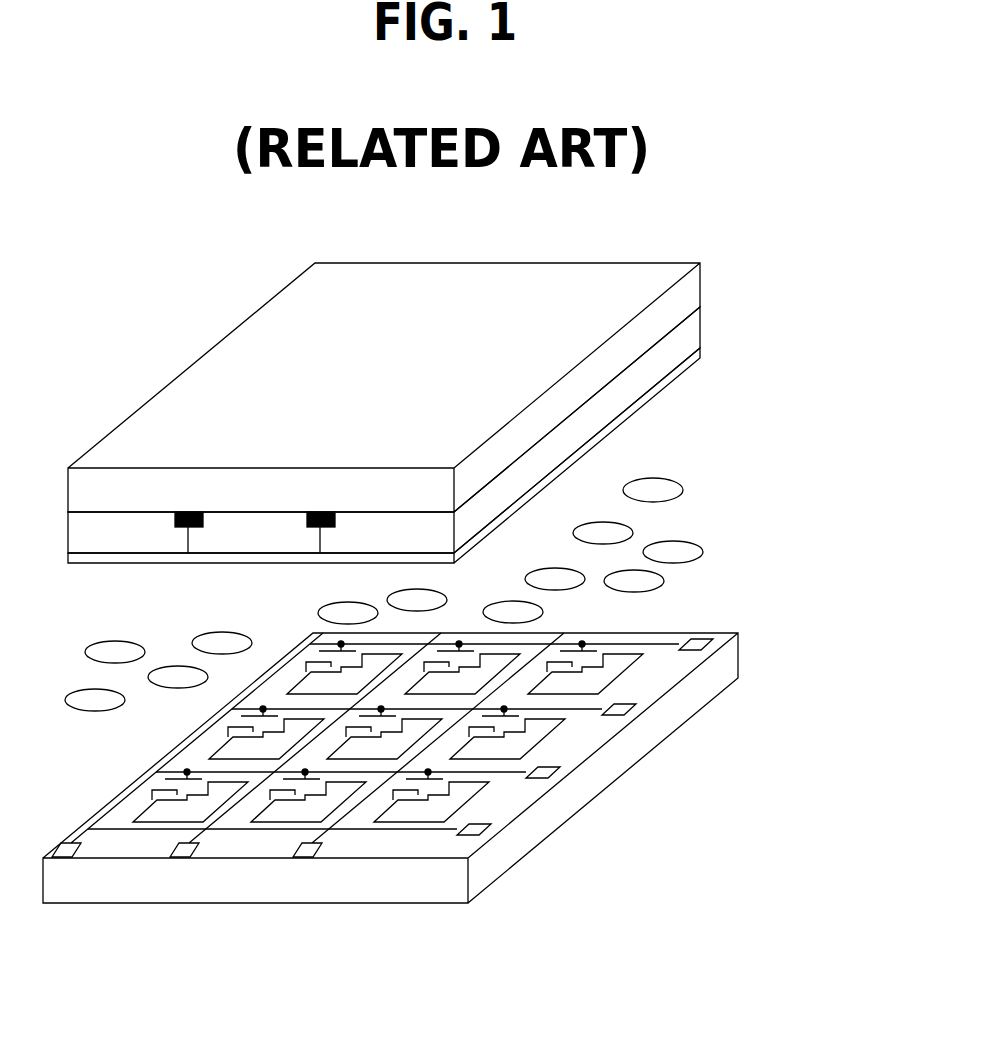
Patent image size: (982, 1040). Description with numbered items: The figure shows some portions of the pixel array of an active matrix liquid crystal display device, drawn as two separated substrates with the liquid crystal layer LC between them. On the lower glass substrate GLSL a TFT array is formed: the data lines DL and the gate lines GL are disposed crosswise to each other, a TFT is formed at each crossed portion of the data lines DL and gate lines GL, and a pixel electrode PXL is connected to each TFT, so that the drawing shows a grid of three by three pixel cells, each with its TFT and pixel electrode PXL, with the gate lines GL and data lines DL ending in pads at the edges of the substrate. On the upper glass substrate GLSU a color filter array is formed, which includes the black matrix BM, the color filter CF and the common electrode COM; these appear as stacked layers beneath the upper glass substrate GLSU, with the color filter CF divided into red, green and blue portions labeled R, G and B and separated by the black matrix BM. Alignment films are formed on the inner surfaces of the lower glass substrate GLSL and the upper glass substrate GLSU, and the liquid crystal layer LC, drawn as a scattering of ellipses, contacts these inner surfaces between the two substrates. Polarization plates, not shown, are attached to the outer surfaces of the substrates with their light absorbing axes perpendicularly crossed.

The upper glass substrate GLSU is at (700, 292).
The color filter CF is at (427, 425).
The common electrode COM is at (700, 352).
The black matrix BM is at (185, 527).
The red color filter R is at (156, 535).
The green color filter G is at (282, 535).
The blue color filter B is at (385, 534).
The liquid crystal layer LC is at (675, 490).
The lower glass substrate GLSL is at (727, 661).
The gate line GL is at (253, 830).
The data line DL is at (330, 830).
The thin film transistor TFT is at (403, 790).
The pixel electrode PXL is at (478, 792).